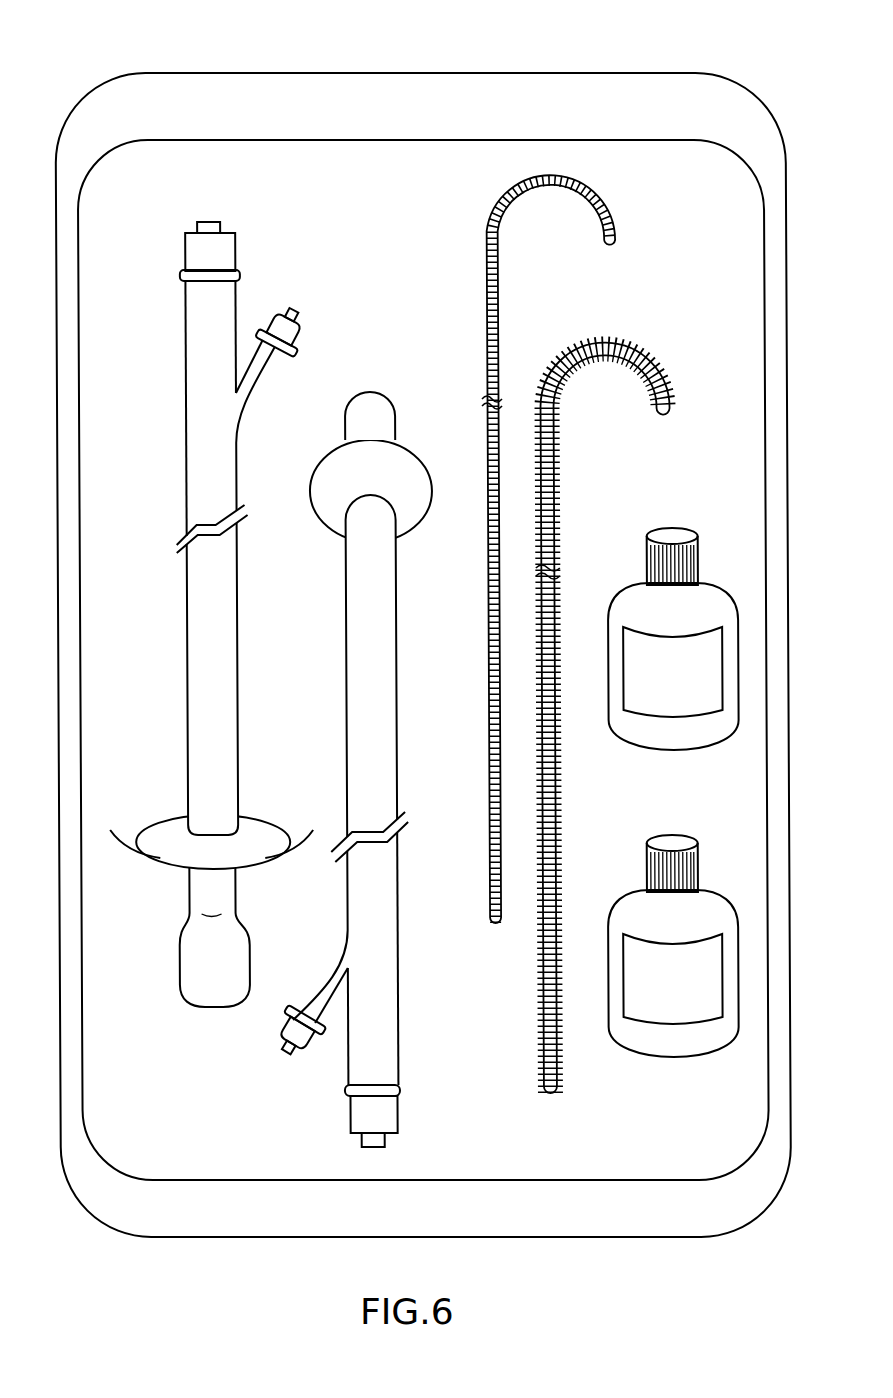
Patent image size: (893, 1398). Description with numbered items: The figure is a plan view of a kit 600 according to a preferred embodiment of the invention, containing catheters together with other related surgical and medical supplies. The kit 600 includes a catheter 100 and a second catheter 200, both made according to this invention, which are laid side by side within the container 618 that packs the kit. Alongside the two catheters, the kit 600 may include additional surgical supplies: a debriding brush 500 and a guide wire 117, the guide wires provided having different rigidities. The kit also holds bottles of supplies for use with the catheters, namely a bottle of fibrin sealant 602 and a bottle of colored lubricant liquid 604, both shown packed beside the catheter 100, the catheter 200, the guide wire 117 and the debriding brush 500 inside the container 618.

The kit 600 is at (702, 29).
The tray 618 is at (445, 88).
The catheter 100 is at (193, 432).
The catheter 200 is at (353, 655).
The guidewire 117 is at (494, 198).
The debriding brush 500 is at (602, 340).
The fibrin sealant 602 is at (677, 752).
The colored lubricant liquid 604 is at (687, 1053).